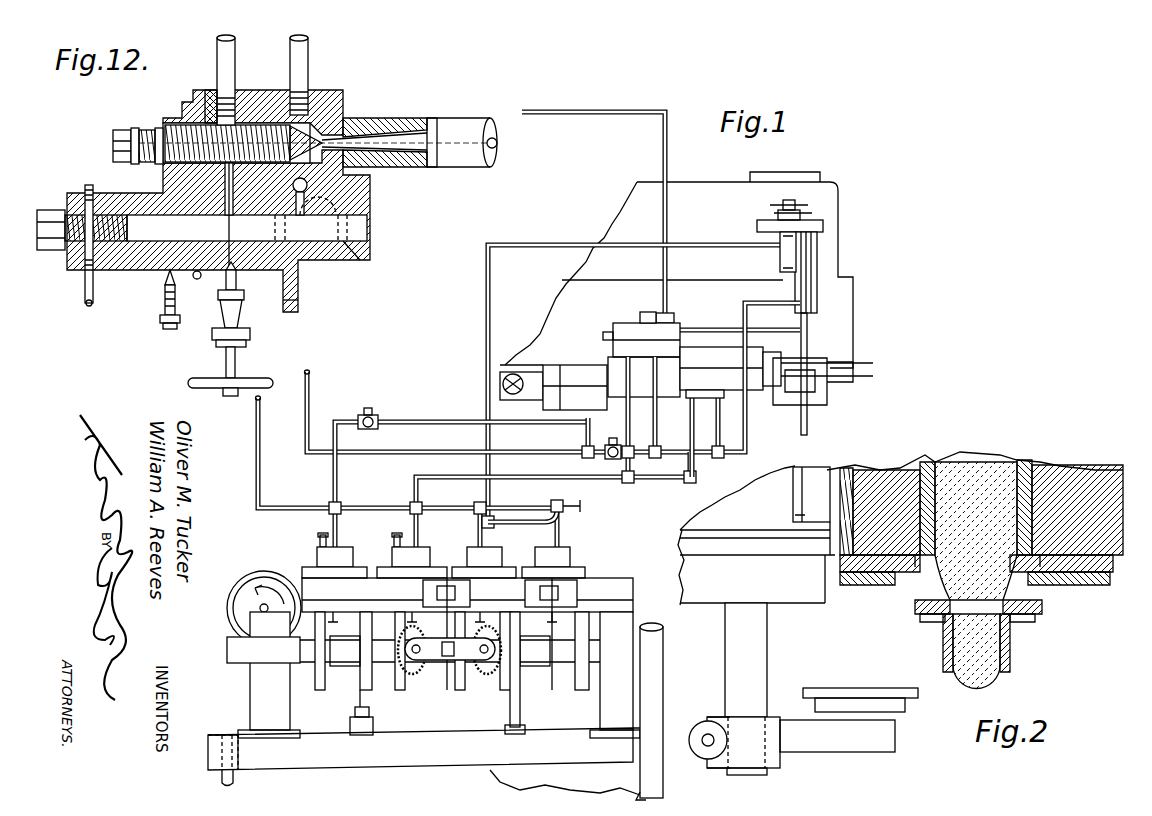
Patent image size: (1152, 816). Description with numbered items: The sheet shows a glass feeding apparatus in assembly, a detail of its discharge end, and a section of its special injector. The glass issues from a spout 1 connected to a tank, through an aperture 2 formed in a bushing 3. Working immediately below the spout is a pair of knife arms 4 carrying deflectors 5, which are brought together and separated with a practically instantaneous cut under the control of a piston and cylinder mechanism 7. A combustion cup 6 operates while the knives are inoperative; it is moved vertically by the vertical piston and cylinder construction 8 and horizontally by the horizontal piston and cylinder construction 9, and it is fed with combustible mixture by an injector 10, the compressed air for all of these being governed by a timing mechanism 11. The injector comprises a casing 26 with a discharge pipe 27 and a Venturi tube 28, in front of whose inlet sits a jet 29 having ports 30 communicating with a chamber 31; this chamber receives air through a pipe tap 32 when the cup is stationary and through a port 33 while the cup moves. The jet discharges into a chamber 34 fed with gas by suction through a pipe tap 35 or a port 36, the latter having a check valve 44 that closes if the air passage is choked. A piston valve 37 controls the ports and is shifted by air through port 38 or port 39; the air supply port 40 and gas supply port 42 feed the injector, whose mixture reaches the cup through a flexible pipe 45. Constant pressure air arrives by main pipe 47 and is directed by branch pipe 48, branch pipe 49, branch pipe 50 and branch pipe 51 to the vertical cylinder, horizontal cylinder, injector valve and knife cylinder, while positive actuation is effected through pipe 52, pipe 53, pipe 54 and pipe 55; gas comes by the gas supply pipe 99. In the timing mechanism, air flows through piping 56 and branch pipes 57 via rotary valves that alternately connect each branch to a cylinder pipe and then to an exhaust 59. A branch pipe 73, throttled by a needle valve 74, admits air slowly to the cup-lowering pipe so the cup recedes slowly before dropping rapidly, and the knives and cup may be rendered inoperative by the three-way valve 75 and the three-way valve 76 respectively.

In FIG. 1, the spout 1 is at (680, 205).
In FIG. 2, the aperture 2 is at (1070, 577).
In FIG. 2, the bushing 3 is at (1015, 585).
In FIG. 2, the knife arms 4 is at (915, 607).
In FIG. 2, the deflectors 5 is at (943, 645).
In FIG. 1, the combustion cup 6 is at (828, 380).
In FIG. 2, the combustion cup 6 is at (905, 704).
In FIG. 1, the piston and cylinder mechanism 7 is at (583, 380).
In FIG. 1, the vertical piston and cylinder construction 8 is at (818, 242).
In FIG. 1, the horizontal piston and cylinder construction 9 is at (703, 372).
In FIG. 12, the injector 10 is at (300, 306).
In FIG. 1, the injector 10 is at (628, 338).
In FIG. 1, the timing mechanism 11 is at (590, 590).
In FIG. 12, the casing 26 is at (105, 265).
In FIG. 12, the discharge pipe 27 is at (385, 128).
In FIG. 12, the Venturi tube 28 is at (347, 165).
In FIG. 12, the jet 29 is at (340, 131).
In FIG. 12, the ports 30 is at (177, 122).
In FIG. 12, the chamber 31 is at (212, 105).
In FIG. 12, the pipe tap 32 is at (231, 95).
In FIG. 12, the port 33 is at (222, 187).
In FIG. 12, the chamber 34 is at (310, 188).
In FIG. 12, the pipe tap 35 is at (306, 94).
In FIG. 12, the port 36 is at (345, 250).
In FIG. 12, the piston valve 37 is at (130, 260).
In FIG. 12, the port 38 is at (148, 232).
In FIG. 12, the port 39 is at (85, 275).
In FIG. 12, the air supply port 40 is at (197, 280).
In FIG. 12, the gas supply port 42 is at (328, 262).
In FIG. 12, the check valve 44 is at (322, 207).
In FIG. 12, the flexible pipe 45 is at (468, 126).
In FIG. 1, the flexible pipe 45 is at (815, 333).
In FIG. 1, the main pipe 47 is at (312, 405).
In FIG. 1, the branch pipe 48 is at (748, 415).
In FIG. 1, the branch pipe 49 is at (719, 436).
In FIG. 1, the branch pipe 50 is at (658, 412).
In FIG. 1, the branch pipe 51 is at (580, 434).
In FIG. 1, the pipe 52 is at (552, 248).
In FIG. 1, the pipe 53 is at (696, 470).
In FIG. 1, the pipe 54 is at (630, 412).
In FIG. 1, the pipe 55 is at (472, 419).
In FIG. 1, the piping 56 is at (280, 512).
In FIG. 1, the branch pipes 57 is at (340, 540).
In FIG. 1, the exhaust 59 is at (318, 541).
In FIG. 1, the branch pipe 73 is at (512, 520).
In FIG. 1, the needle valve 74 is at (577, 502).
In FIG. 1, the three-way valve 75 is at (372, 414).
In FIG. 1, the three-way valve 76 is at (612, 458).
In FIG. 1, the gas supply pipe 99 is at (668, 158).